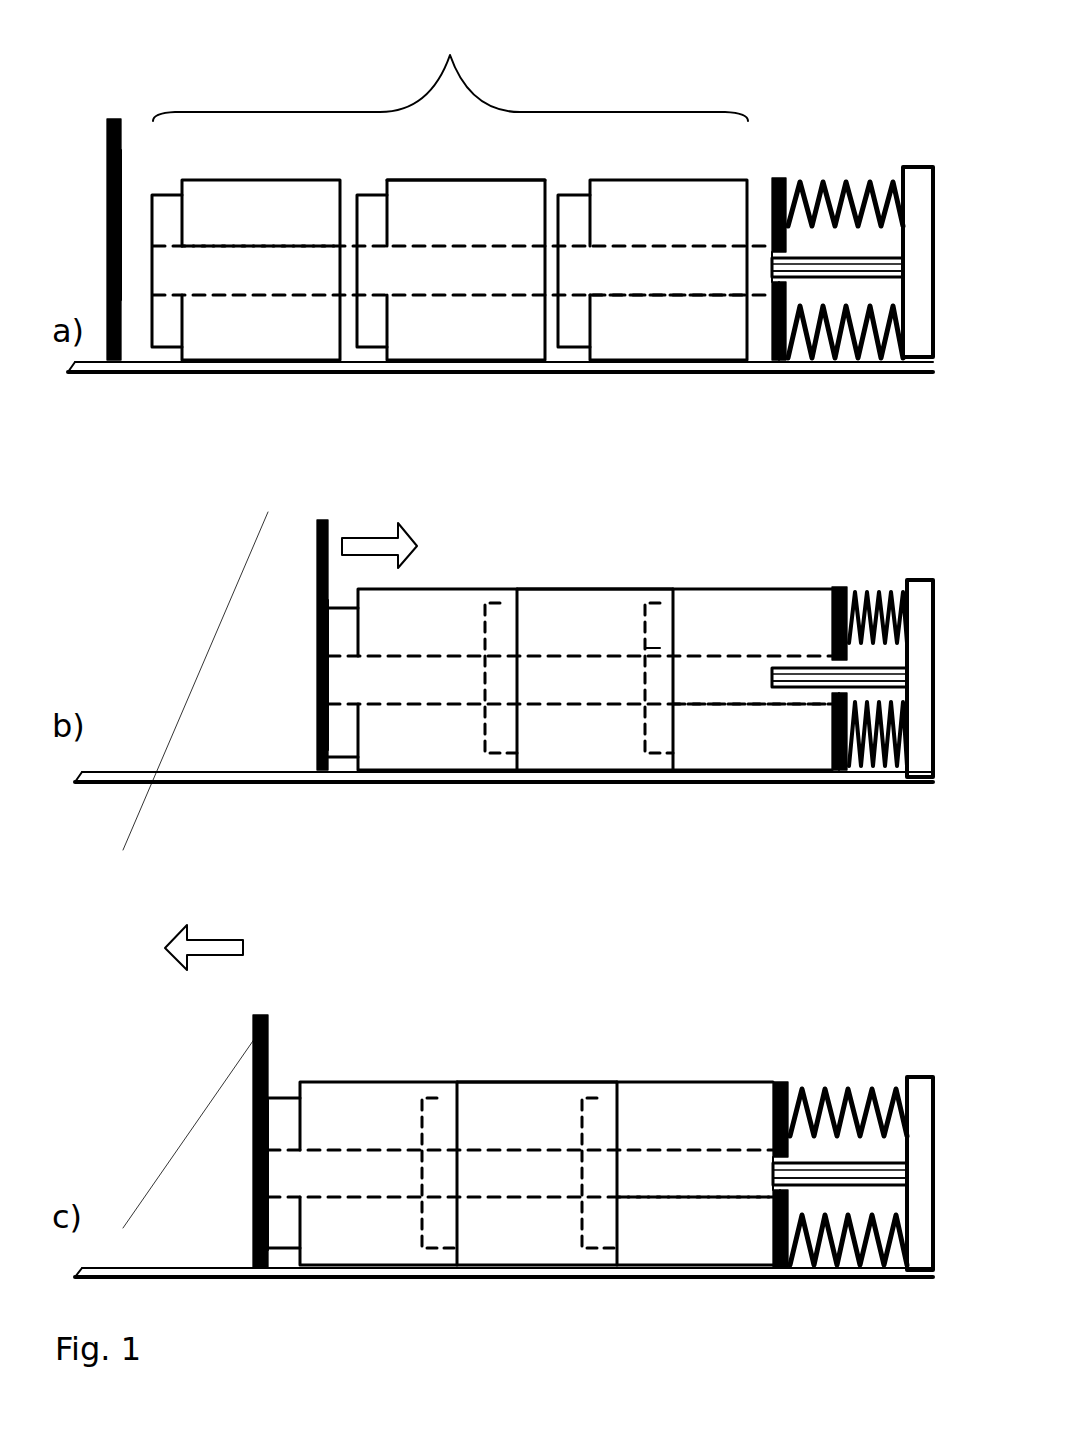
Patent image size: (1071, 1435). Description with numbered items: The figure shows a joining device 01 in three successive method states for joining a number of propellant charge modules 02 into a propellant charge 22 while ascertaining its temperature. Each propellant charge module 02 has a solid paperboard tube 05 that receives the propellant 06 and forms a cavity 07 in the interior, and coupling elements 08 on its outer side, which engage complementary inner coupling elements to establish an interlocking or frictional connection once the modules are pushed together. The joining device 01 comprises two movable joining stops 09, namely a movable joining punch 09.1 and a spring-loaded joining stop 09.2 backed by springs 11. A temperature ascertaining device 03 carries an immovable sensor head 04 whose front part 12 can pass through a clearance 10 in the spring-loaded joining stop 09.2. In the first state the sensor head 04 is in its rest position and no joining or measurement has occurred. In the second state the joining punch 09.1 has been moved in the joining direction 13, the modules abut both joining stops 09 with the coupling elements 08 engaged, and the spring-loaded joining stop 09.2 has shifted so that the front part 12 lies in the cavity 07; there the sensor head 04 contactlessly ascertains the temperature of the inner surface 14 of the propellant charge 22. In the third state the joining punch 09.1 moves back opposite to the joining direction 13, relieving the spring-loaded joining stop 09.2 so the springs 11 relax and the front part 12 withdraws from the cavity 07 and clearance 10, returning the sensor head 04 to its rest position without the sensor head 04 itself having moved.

In FIG. 1a, the joining device 01 is at (133, 100).
In FIG. 1b, the joining device 01 is at (443, 512).
In FIG. 1c, the joining device 01 is at (360, 1000).
In FIG. 1a, the propellant charge module 02 is at (230, 200).
In FIG. 1b, the propellant charge module 02 is at (403, 750).
In FIG. 1c, the propellant charge module 02 is at (357, 1248).
In FIG. 1a, the temperature ascertaining device 03 is at (885, 160).
In FIG. 1b, the temperature ascertaining device 03 is at (887, 558).
In FIG. 1c, the temperature ascertaining device 03 is at (830, 1050).
In FIG. 1a, the sensor head 04 is at (885, 270).
In FIG. 1b, the sensor head 04 is at (890, 676).
In FIG. 1c, the sensor head 04 is at (825, 1185).
In FIG. 1a, the solid paperboard tube 05 is at (486, 175).
In FIG. 1a, the propellant 06 is at (272, 215).
In FIG. 1a, the cavity 07 is at (630, 277).
In FIG. 1b, the cavity 07 is at (707, 690).
In FIG. 1c, the cavity 07 is at (652, 1172).
In FIG. 1a, the coupling element 08 is at (167, 228).
In FIG. 1b, the coupling element 08 is at (499, 630).
In FIG. 1c, the coupling element 08 is at (442, 1173).
In FIG. 1a, the joining stop 09 is at (107, 155).
In FIG. 1b, the joining stop 09 is at (318, 545).
In FIG. 1c, the joining stop 09 is at (255, 1078).
In FIG. 1a, the joining punch 09.1 is at (107, 258).
In FIG. 1b, the joining punch 09.1 is at (316, 675).
In FIG. 1c, the joining punch 09.1 is at (255, 1183).
In FIG. 1a, the spring-loaded joining stop 09.2 is at (776, 300).
In FIG. 1b, the spring-loaded joining stop 09.2 is at (848, 765).
In FIG. 1c, the spring-loaded joining stop 09.2 is at (785, 1268).
In FIG. 1a, the clearance 10 is at (772, 250).
In FIG. 1c, the clearance 10 is at (782, 1158).
In FIG. 1a, the spring 11 is at (858, 180).
In FIG. 1c, the spring 11 is at (862, 1087).
In FIG. 1a, the front part 12 is at (771, 262).
In FIG. 1b, the front part 12 is at (790, 680).
In FIG. 1c, the front part 12 is at (777, 1270).
In FIG. 1b, the joining direction 13 is at (385, 547).
In FIG. 1c, the joining direction 13 is at (223, 950).
In FIG. 1b, the inner surface 14 is at (652, 665).
In FIG. 1a, the propellant charge 22 is at (450, 71).
In FIG. 1b, the propellant charge 22 is at (558, 605).
In FIG. 1c, the propellant charge 22 is at (530, 1110).